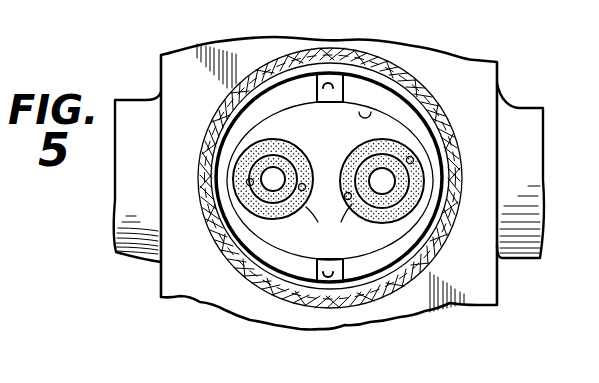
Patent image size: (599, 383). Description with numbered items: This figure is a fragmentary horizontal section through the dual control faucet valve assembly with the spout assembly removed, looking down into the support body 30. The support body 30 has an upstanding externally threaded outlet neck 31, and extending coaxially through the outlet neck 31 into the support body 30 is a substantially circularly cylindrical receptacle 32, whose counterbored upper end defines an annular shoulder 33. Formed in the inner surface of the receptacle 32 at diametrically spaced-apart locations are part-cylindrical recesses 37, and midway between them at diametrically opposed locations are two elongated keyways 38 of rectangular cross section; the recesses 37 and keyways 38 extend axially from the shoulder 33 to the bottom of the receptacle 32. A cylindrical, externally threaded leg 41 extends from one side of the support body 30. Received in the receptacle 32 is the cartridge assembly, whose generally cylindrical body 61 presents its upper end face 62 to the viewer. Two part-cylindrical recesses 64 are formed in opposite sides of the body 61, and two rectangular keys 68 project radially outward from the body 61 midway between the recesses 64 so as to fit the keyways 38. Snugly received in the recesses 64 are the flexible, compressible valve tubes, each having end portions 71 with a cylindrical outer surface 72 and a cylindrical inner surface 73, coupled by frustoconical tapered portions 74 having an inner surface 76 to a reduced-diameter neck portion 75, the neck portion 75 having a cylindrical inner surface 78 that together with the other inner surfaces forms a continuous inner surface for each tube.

The support body 30 is at (470, 59).
The outlet neck 31 is at (240, 279).
The receptacle 32 is at (366, 108).
The annular shoulder 33 is at (370, 272).
The part-cylindrical recesses 37 is at (423, 142).
The keyways 38 is at (328, 82).
The leg 41 is at (114, 253).
The body 61 is at (291, 113).
The upper end face 62 is at (340, 124).
The part-cylindrical recesses 64 is at (329, 223).
The keys 68 is at (281, 290).
The end portions 71 is at (243, 220).
The cylindrical outer surface 72 is at (243, 152).
The cylindrical inner surface 73 is at (266, 185).
The tapered portions 74 is at (402, 182).
The neck portion 75 is at (382, 176).
The inner surface 76 is at (393, 196).
The cylindrical inner surface 78 is at (276, 190).